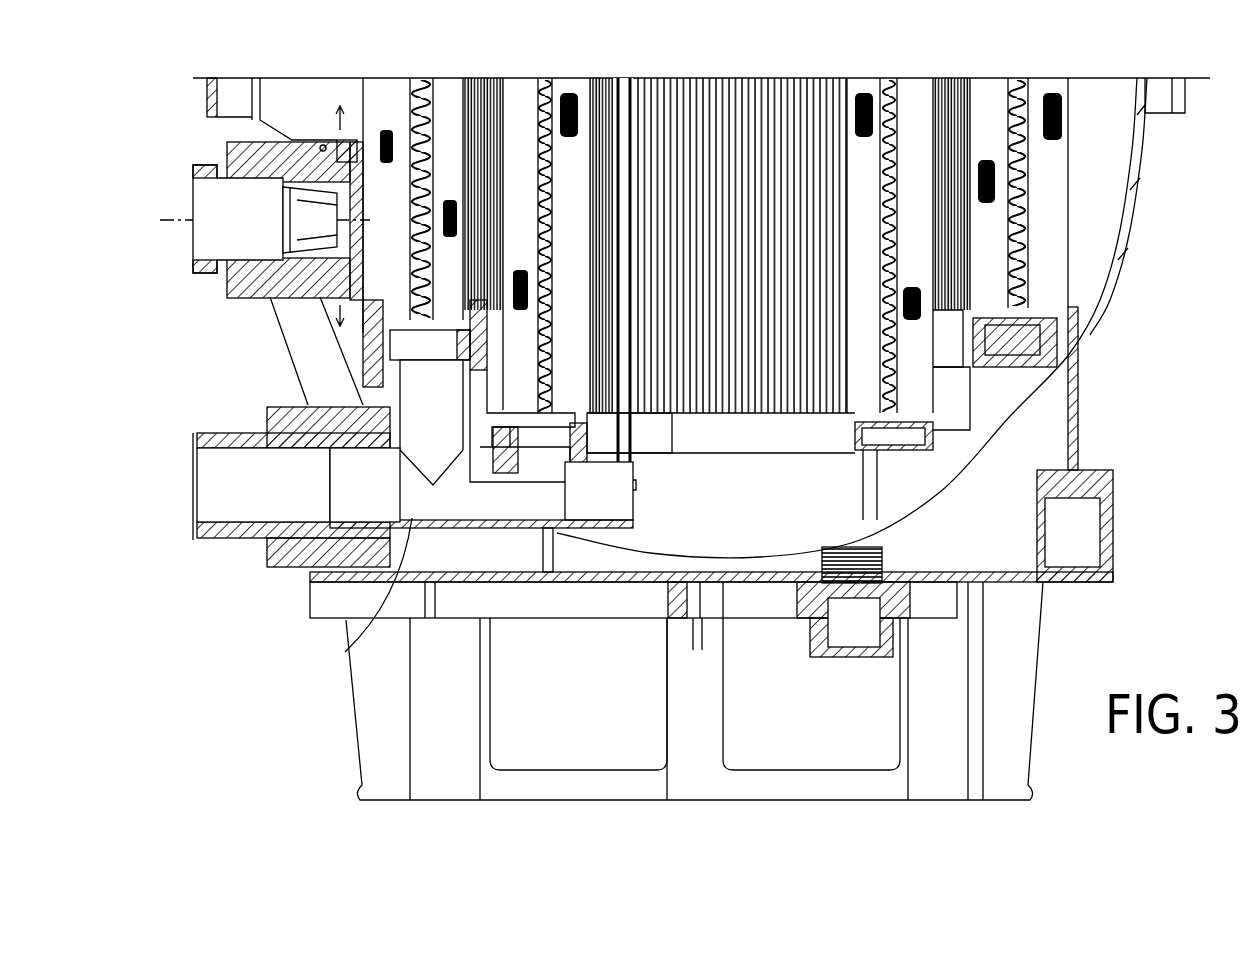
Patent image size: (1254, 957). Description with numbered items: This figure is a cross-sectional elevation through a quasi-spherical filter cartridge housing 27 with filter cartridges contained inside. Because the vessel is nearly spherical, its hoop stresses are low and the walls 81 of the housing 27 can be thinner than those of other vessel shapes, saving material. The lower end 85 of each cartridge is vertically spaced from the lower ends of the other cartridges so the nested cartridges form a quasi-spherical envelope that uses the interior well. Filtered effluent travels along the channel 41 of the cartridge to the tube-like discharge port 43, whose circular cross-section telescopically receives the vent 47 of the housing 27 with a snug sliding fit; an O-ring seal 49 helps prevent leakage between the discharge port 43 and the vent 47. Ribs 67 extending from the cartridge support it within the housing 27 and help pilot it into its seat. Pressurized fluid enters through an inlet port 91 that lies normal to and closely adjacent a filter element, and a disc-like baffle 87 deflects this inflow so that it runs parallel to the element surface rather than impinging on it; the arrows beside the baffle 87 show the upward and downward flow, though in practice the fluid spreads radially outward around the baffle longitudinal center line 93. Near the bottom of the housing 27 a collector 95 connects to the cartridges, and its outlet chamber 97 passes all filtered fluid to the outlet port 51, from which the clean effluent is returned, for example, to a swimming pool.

The filter cartridge housing 27 is at (1147, 148).
The walls 81 is at (1120, 272).
The lower end 85 is at (1050, 323).
The channel 41 is at (1055, 348).
The ribs 67 is at (970, 400).
The discharge port 43 is at (380, 352).
The vent 47 is at (375, 396).
The O-ring seal 49 is at (462, 380).
The outlet port 51 is at (213, 540).
The collector 95 is at (345, 652).
The outlet chamber 97 is at (443, 505).
The baffle 87 is at (345, 145).
The inlet port 91 is at (197, 178).
The baffle longitudinal center line 93 is at (199, 224).